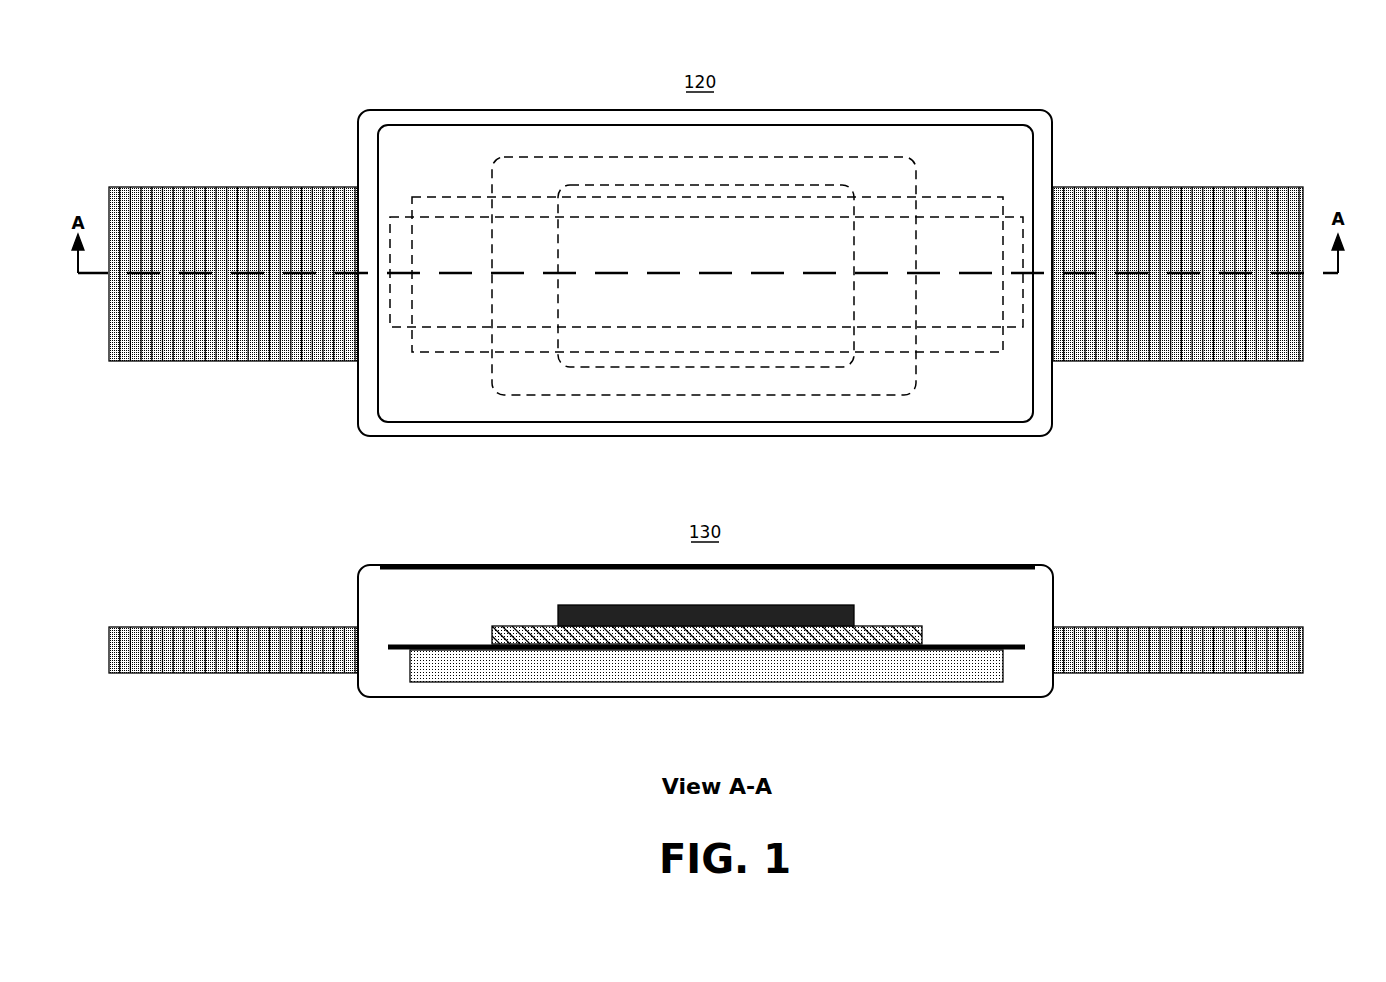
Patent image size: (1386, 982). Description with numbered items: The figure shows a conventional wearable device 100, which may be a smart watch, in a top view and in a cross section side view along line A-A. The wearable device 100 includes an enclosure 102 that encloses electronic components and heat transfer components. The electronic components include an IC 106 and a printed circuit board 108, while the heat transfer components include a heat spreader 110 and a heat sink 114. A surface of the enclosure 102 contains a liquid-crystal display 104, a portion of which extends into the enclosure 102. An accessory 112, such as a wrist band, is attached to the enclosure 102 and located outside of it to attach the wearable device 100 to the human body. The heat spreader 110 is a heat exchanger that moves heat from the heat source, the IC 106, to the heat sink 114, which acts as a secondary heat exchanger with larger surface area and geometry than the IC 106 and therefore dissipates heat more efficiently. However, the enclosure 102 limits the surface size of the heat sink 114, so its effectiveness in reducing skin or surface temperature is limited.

The wearable device 100 is at (158, 106).
The enclosure 102 is at (1054, 118).
The liquid-crystal display (LCD) 104 is at (930, 125).
The IC 106 is at (848, 185).
The printed circuit board (PCB) 108 is at (916, 186).
The heat spreader 110 is at (420, 217).
The accessory 112 is at (157, 187).
The heat sink 114 is at (947, 352).